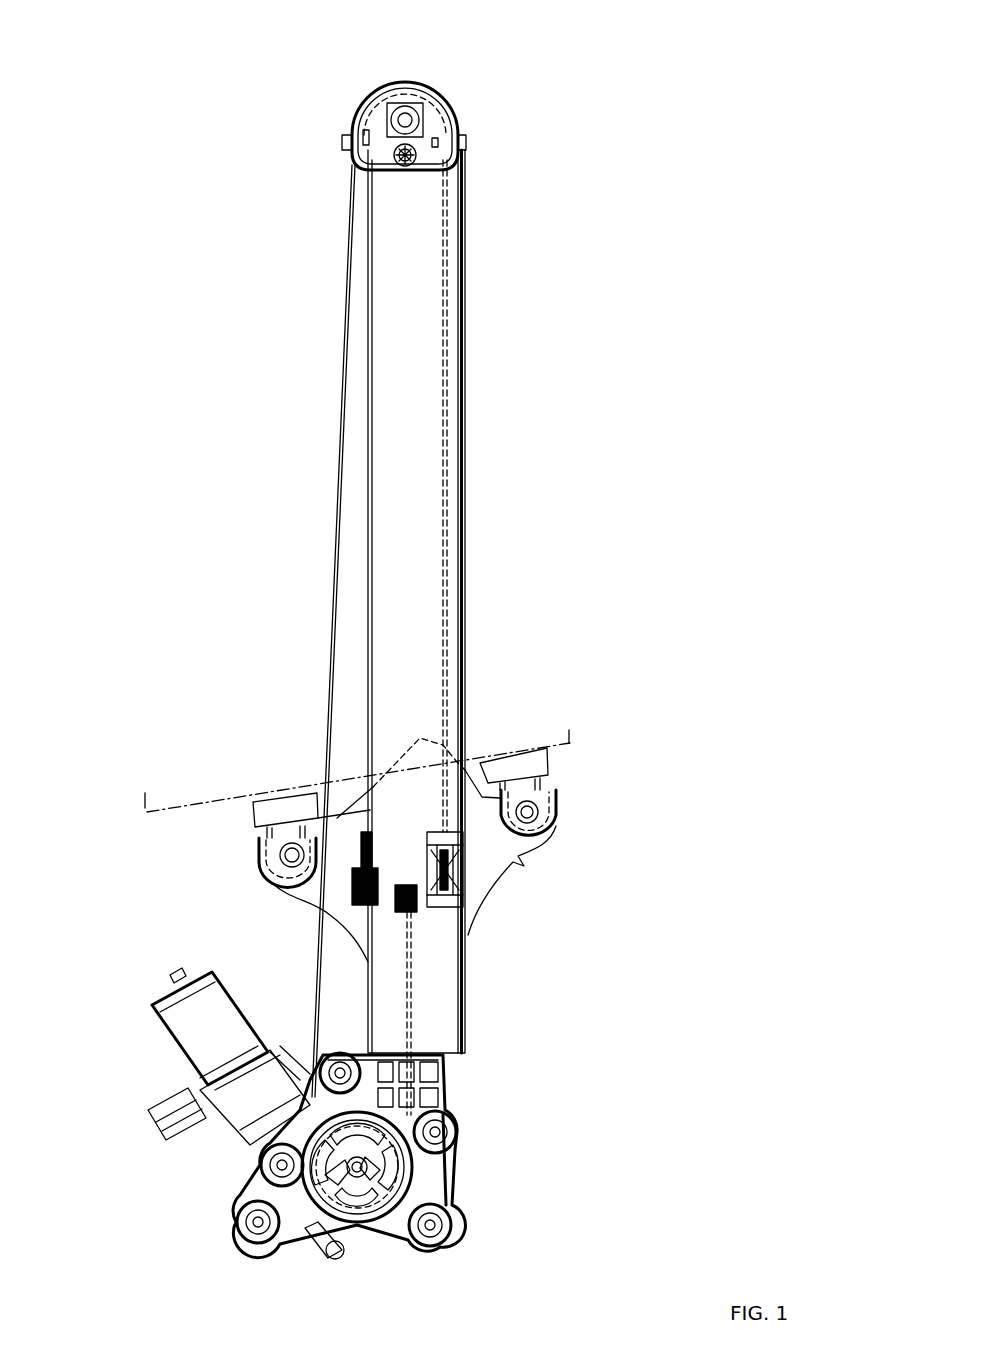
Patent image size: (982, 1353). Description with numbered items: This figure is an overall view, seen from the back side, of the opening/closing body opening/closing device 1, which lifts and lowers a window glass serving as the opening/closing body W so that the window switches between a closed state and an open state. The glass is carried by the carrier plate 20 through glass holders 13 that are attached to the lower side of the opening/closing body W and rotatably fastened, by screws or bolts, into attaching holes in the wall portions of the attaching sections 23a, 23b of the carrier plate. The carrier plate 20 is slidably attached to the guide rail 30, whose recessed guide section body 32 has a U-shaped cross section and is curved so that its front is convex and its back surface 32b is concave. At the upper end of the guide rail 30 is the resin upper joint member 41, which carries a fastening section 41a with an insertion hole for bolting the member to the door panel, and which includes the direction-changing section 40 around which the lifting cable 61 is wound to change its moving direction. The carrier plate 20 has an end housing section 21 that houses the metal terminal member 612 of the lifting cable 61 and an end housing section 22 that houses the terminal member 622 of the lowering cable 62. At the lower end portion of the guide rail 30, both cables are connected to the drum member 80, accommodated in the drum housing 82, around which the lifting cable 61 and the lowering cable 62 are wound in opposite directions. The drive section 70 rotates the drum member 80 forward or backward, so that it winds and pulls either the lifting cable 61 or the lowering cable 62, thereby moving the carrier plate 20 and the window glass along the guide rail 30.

The opening/closing body opening/closing device 1 is at (580, 38).
The glass holders 13 is at (253, 808).
The carrier plate 20 is at (414, 850).
The end housing section 21 is at (517, 869).
The end housing section 22 is at (417, 912).
The attaching section 23a is at (552, 787).
The attaching section 23b is at (260, 862).
The guide rail 30 is at (469, 601).
The guide section body 32 is at (463, 601).
The back surface 32b is at (423, 678).
The direction-changing section 40 is at (408, 96).
The upper joint member 41 is at (435, 96).
The fastening section 41a is at (430, 118).
The lifting cable 61 is at (343, 527).
The lowering cable 62 is at (413, 637).
The terminal member 612 is at (465, 842).
The terminal member 622 is at (403, 917).
The drive section 70 is at (206, 1115).
The drum member 80 is at (379, 1156).
The drum housing 82 is at (443, 1163).
The opening/closing body W is at (143, 795).